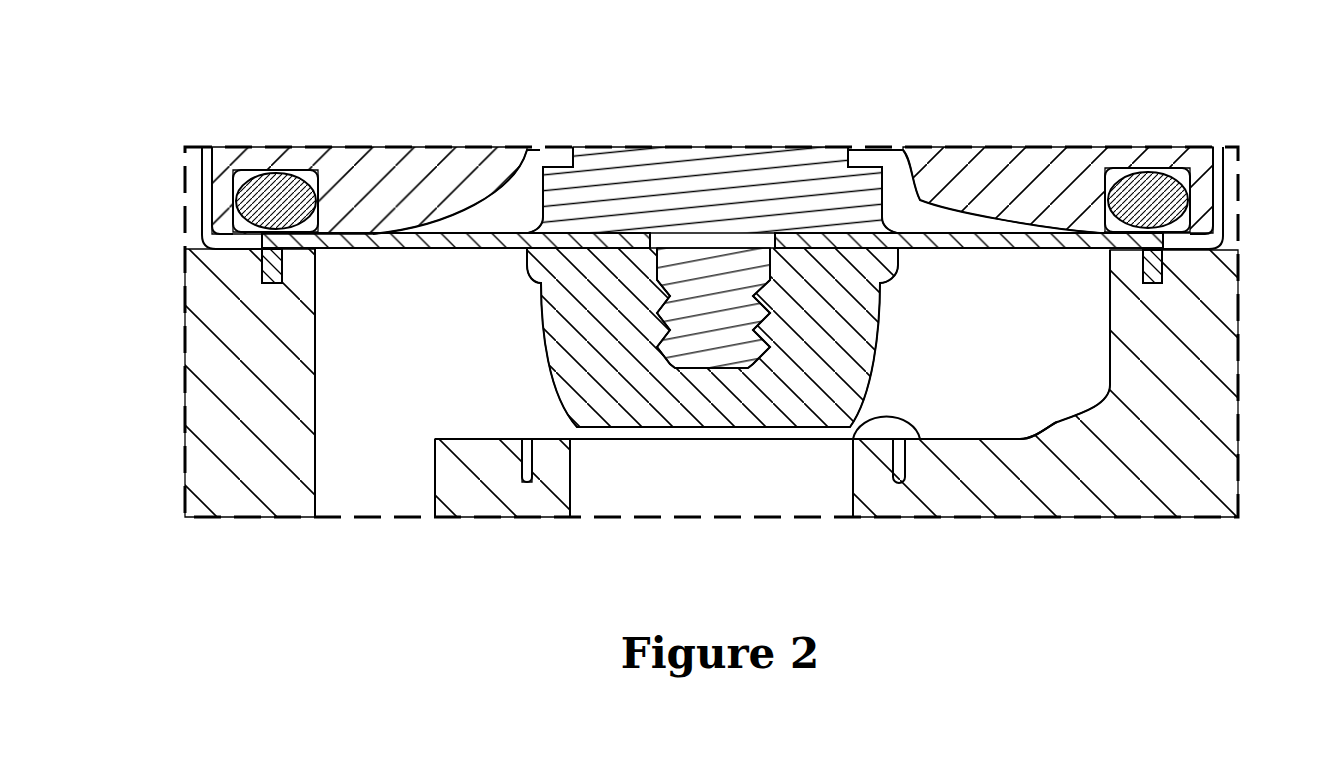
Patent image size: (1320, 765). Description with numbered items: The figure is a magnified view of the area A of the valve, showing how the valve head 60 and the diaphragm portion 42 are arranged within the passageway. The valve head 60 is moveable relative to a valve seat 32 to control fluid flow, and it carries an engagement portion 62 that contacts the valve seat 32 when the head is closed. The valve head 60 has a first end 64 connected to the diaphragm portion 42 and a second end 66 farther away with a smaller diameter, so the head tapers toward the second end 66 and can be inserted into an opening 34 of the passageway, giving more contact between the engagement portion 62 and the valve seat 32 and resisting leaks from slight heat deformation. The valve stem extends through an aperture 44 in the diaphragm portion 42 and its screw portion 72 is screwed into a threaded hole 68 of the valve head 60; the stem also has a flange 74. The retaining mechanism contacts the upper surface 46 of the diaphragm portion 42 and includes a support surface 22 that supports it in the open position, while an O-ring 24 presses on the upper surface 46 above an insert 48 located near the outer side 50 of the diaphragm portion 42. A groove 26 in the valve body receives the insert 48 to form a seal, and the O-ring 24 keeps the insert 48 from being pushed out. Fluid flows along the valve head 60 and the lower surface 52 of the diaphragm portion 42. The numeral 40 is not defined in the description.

The support surface 22 is at (413, 248).
The O-ring 24 is at (1127, 170).
The groove 26 is at (262, 258).
The valve seat 32 is at (920, 439).
The opening 34 is at (787, 439).
The assembly 40 is at (418, 352).
The diaphragm portion 42 is at (712, 221).
The aperture 44 is at (772, 255).
The upper surface 46 is at (980, 233).
The insert 48 is at (1162, 262).
The outer side 50 is at (1110, 252).
The lower surface 52 is at (1034, 250).
The valve head 60 is at (878, 368).
The engagement portion 62 is at (550, 390).
The first end 64 is at (593, 232).
The second end 66 is at (614, 427).
The threaded hole 68 is at (663, 287).
The screw portion 72 is at (718, 224).
The flange 74 is at (920, 200).
The area A is at (1237, 147).